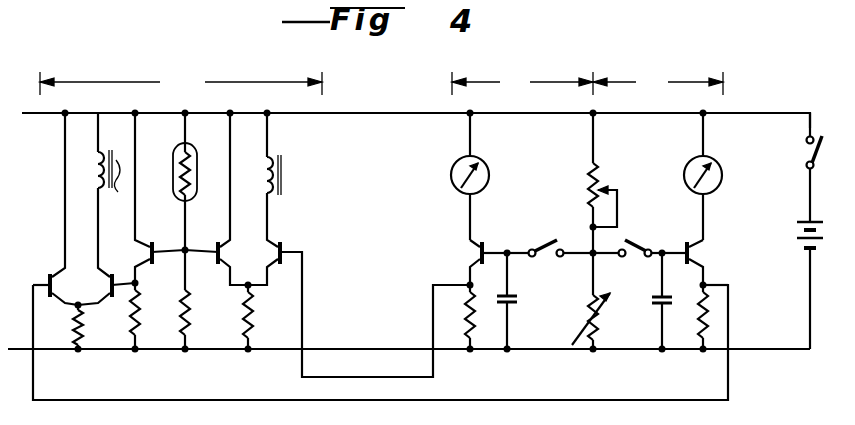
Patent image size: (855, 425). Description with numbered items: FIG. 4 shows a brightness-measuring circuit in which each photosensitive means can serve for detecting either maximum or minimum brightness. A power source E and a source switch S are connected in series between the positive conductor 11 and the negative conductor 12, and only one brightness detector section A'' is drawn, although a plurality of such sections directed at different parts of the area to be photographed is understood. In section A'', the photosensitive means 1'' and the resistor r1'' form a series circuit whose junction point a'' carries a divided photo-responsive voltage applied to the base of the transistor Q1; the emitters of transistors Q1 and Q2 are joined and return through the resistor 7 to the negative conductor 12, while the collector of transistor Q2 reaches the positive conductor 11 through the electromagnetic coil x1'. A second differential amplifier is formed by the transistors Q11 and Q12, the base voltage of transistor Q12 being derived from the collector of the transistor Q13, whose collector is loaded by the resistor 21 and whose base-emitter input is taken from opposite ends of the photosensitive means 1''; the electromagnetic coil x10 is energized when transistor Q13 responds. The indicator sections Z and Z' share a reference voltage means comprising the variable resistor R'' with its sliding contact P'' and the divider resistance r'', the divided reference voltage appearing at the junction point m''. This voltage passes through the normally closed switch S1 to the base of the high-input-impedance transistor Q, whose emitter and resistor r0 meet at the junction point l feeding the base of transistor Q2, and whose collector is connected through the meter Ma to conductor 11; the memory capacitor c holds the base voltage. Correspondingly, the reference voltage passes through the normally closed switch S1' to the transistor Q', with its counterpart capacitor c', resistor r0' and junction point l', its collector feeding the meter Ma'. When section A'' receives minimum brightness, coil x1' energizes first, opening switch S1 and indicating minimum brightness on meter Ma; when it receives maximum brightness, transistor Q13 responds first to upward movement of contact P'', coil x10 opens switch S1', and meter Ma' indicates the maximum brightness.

The brightness detector section A'' is at (181, 83).
The positive conductor 11 is at (366, 112).
The indicator section Z is at (522, 83).
The maximum brightness detector section Z' is at (658, 83).
The electromagnetic coil x10 is at (118, 193).
The photosensitive means 1'' is at (198, 181).
The electromagnetic coil x1' is at (296, 156).
The transistor Q11 is at (52, 278).
The transistor Q12 is at (108, 278).
The transistor Q13 is at (143, 242).
The transistor Q1 is at (224, 242).
The transistor Q2 is at (282, 243).
The junction point a'' is at (198, 270).
The resistor r1'' is at (204, 319).
The resistor 7 is at (254, 312).
The resistor 21 is at (140, 312).
The negative conductor 12 is at (358, 349).
The meter Ma is at (484, 176).
The meter Ma' is at (719, 176).
The variable resistor R'' is at (580, 170).
The sliding contact P'' is at (606, 199).
The normally closed switch S1 is at (550, 239).
The normally closed switch S1' is at (627, 240).
The transistor Q is at (468, 262).
The transistor Q' is at (695, 262).
The junction point l is at (432, 276).
The conductor l' is at (727, 274).
The junction point m'' is at (584, 261).
The variable resistor r'' is at (595, 321).
The memory capacitor c is at (513, 300).
The capacitor c' is at (653, 301).
The resistor r0 is at (459, 317).
The resistor r0' is at (692, 317).
The source switch S is at (818, 167).
The power source E is at (818, 234).